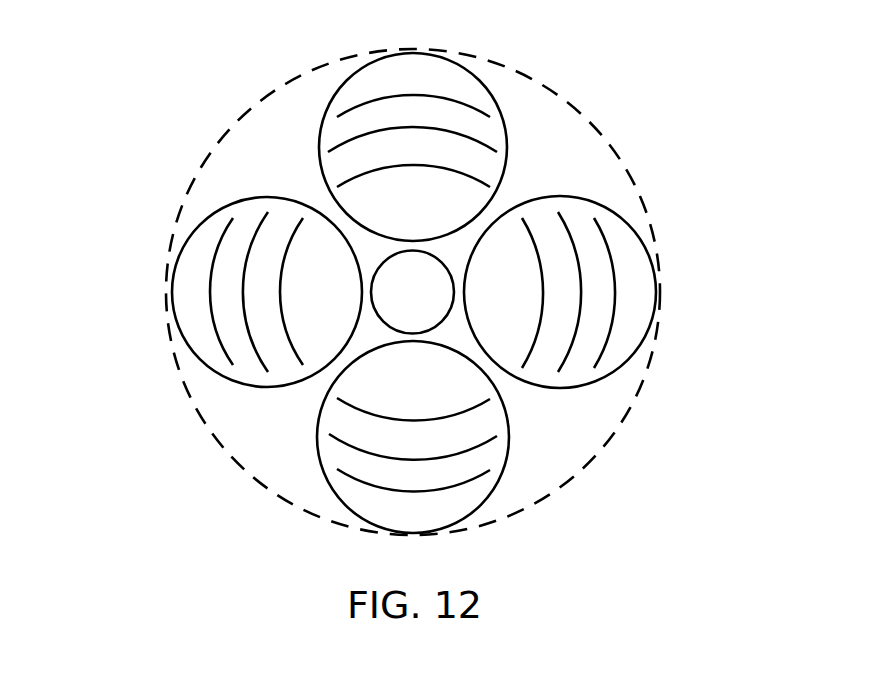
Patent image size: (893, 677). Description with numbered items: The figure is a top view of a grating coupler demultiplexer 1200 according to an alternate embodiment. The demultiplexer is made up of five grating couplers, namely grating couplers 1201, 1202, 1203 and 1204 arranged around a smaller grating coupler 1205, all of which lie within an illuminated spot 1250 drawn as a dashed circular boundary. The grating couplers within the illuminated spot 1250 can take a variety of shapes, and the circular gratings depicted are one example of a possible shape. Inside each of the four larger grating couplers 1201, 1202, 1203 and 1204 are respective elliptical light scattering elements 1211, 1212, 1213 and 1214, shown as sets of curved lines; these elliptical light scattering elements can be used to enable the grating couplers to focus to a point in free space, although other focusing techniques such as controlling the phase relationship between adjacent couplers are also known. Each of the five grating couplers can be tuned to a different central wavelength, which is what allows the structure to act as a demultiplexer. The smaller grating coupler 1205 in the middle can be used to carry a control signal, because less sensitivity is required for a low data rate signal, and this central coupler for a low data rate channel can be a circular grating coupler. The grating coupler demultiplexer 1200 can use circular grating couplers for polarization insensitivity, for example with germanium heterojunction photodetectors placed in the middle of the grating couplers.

The grating coupler demultiplexer 1200 is at (202, 501).
The illuminated spot 1250 is at (215, 437).
The smaller grating coupler 1205 is at (441, 305).
The grating coupler 1201 is at (487, 498).
The grating coupler 1202 is at (193, 232).
The grating coupler 1203 is at (322, 130).
The grating coupler 1204 is at (607, 207).
The elliptical light scattering elements 1211 is at (499, 459).
The elliptical light scattering elements 1212 is at (183, 289).
The elliptical light scattering elements 1213 is at (398, 69).
The elliptical light scattering elements 1214 is at (635, 286).